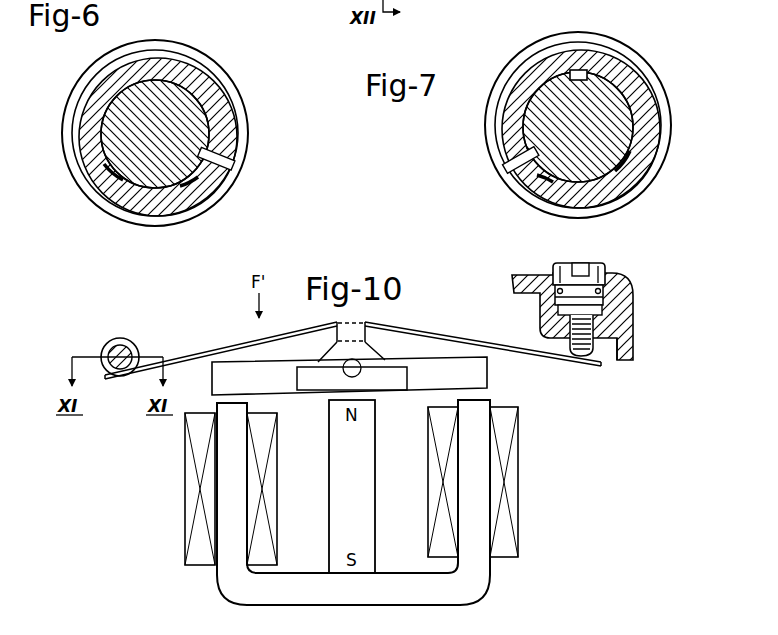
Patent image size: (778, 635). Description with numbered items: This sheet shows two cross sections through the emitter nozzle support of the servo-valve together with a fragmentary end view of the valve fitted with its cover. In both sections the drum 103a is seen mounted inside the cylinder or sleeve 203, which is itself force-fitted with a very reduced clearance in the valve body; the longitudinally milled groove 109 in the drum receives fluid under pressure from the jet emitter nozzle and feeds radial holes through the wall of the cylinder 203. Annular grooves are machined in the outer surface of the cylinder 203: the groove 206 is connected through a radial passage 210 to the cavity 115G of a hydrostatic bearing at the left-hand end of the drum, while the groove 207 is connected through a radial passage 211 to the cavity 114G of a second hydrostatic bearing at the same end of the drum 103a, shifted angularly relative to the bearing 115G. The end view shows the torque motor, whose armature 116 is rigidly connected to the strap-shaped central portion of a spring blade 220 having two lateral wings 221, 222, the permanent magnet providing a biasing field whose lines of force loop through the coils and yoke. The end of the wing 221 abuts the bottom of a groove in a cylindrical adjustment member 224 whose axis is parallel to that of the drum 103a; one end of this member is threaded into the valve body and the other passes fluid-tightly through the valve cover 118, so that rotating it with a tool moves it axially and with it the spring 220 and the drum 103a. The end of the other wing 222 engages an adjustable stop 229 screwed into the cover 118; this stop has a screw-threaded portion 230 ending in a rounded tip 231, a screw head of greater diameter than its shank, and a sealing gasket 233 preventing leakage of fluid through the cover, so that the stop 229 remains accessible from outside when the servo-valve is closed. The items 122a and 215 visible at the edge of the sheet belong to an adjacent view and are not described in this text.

In FIG. 6, the annular groove 206 is at (217, 72).
In FIG. 6, the cylinder or sleeve 203 is at (228, 103).
In FIG. 6, the radial passage 210 is at (230, 155).
In FIG. 6, the hydrostatic bearing cavity 114G is at (115, 168).
In FIG. 7, the hydrostatic bearing cavity 114G is at (535, 162).
In FIG. 6, the hydrostatic bearing cavity 115G is at (194, 168).
In FIG. 7, the hydrostatic bearing cavity 115G is at (615, 145).
In FIG. 7, the annular groove 207 is at (637, 60).
In FIG. 7, the drum 103a is at (613, 108).
In FIG. 7, the longitudinally milled groove 109 is at (580, 70).
In FIG. 7, the radial passage 211 is at (517, 157).
In FIG. 7, the member 122a is at (350, 0).
In FIG. 7, the member 215 is at (491, 5).
In FIG. 10, the cylindrical adjustment member 224 is at (130, 340).
In FIG. 10, the wing 221 is at (206, 352).
In FIG. 10, the wing 222 is at (426, 335).
In FIG. 10, the spring blade 220 is at (364, 322).
In FIG. 10, the armature 116 is at (488, 373).
In FIG. 10, the valve cover 118 is at (633, 318).
In FIG. 10, the adjustable stop 229 is at (617, 317).
In FIG. 10, the sealing gasket 233 is at (600, 290).
In FIG. 10, the screw-threaded portion 230 is at (597, 340).
In FIG. 10, the rounded tip 231 is at (598, 357).